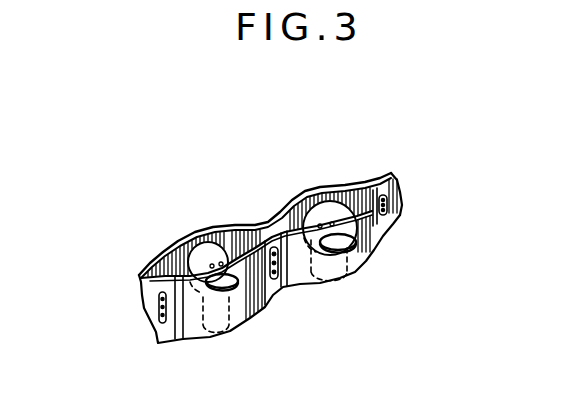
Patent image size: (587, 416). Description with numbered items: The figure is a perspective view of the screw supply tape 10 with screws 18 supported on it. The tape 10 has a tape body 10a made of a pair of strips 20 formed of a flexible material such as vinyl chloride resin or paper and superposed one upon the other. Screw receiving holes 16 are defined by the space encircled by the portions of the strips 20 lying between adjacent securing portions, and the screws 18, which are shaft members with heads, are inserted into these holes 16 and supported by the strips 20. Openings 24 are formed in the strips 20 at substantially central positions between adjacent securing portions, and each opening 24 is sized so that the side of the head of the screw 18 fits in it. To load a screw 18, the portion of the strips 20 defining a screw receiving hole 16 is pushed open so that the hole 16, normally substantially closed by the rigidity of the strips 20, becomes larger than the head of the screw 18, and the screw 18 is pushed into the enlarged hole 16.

The screw supply tape 10 is at (260, 210).
The tape body 10a is at (402, 200).
The screw receiving hole 16 is at (227, 249).
The screw 18 is at (203, 232).
The strip 20 is at (139, 274).
The opening 24 is at (237, 321).